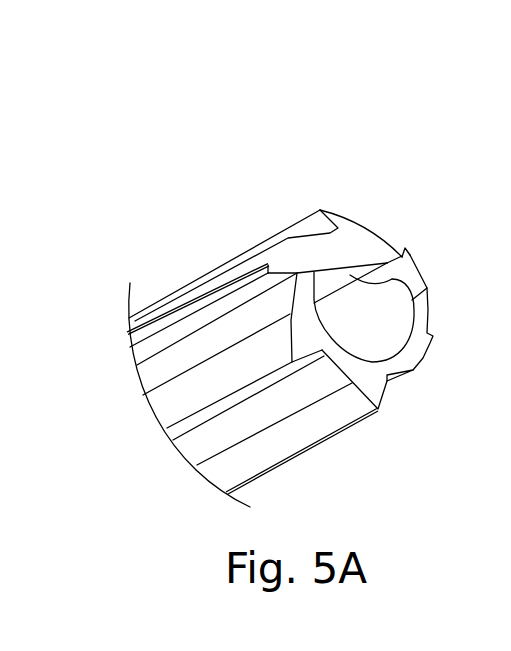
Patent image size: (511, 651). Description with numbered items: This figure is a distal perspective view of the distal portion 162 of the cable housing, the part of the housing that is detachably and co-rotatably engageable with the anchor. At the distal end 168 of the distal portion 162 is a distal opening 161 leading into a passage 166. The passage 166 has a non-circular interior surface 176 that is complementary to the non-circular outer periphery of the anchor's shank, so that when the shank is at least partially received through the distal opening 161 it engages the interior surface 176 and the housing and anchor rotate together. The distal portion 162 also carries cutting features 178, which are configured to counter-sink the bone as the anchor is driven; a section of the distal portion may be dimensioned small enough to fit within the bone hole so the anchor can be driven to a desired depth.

The distal portion 162 is at (252, 290).
The distal opening 161 is at (424, 285).
The passage 166 is at (375, 335).
The distal end 168 is at (363, 231).
The interior surface 176 is at (406, 252).
The cutting features 178 is at (230, 291).